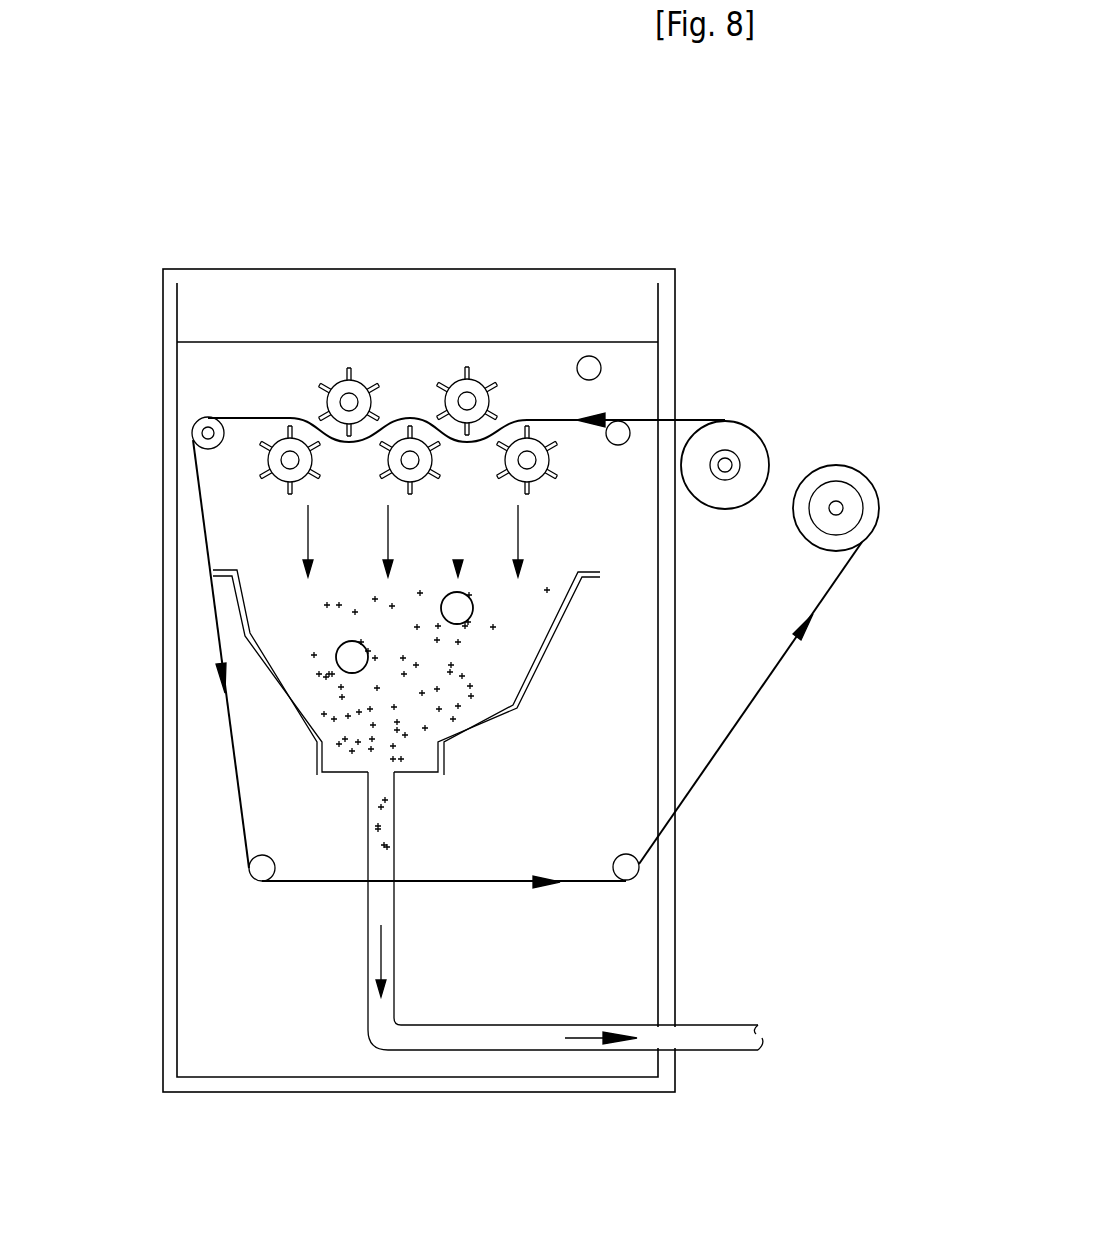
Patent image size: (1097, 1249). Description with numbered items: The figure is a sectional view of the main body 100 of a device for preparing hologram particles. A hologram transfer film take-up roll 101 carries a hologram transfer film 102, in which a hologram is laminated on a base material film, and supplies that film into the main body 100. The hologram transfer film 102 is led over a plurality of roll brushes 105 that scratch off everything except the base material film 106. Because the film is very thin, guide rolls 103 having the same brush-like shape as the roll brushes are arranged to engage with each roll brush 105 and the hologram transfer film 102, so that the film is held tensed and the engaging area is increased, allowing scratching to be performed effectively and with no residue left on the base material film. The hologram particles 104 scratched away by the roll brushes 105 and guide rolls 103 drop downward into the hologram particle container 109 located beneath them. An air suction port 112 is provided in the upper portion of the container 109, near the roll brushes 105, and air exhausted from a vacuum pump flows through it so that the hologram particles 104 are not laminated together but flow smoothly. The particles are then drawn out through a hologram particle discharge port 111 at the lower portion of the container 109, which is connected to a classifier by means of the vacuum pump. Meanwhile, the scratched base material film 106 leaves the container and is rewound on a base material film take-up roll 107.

The main body 100 is at (625, 178).
The hologram transfer film take-up roll 101 is at (733, 453).
The hologram transfer film 102 is at (690, 420).
The guide roll 103 is at (357, 363).
The hologram particles 104 is at (350, 747).
The roll brush 105 is at (272, 432).
The base material film 106 is at (848, 478).
The base material film take-up roll 107 is at (855, 507).
The hologram particle container 109 is at (213, 572).
The hologram particle discharge port 111 is at (720, 1033).
The air suction port 112 is at (337, 652).